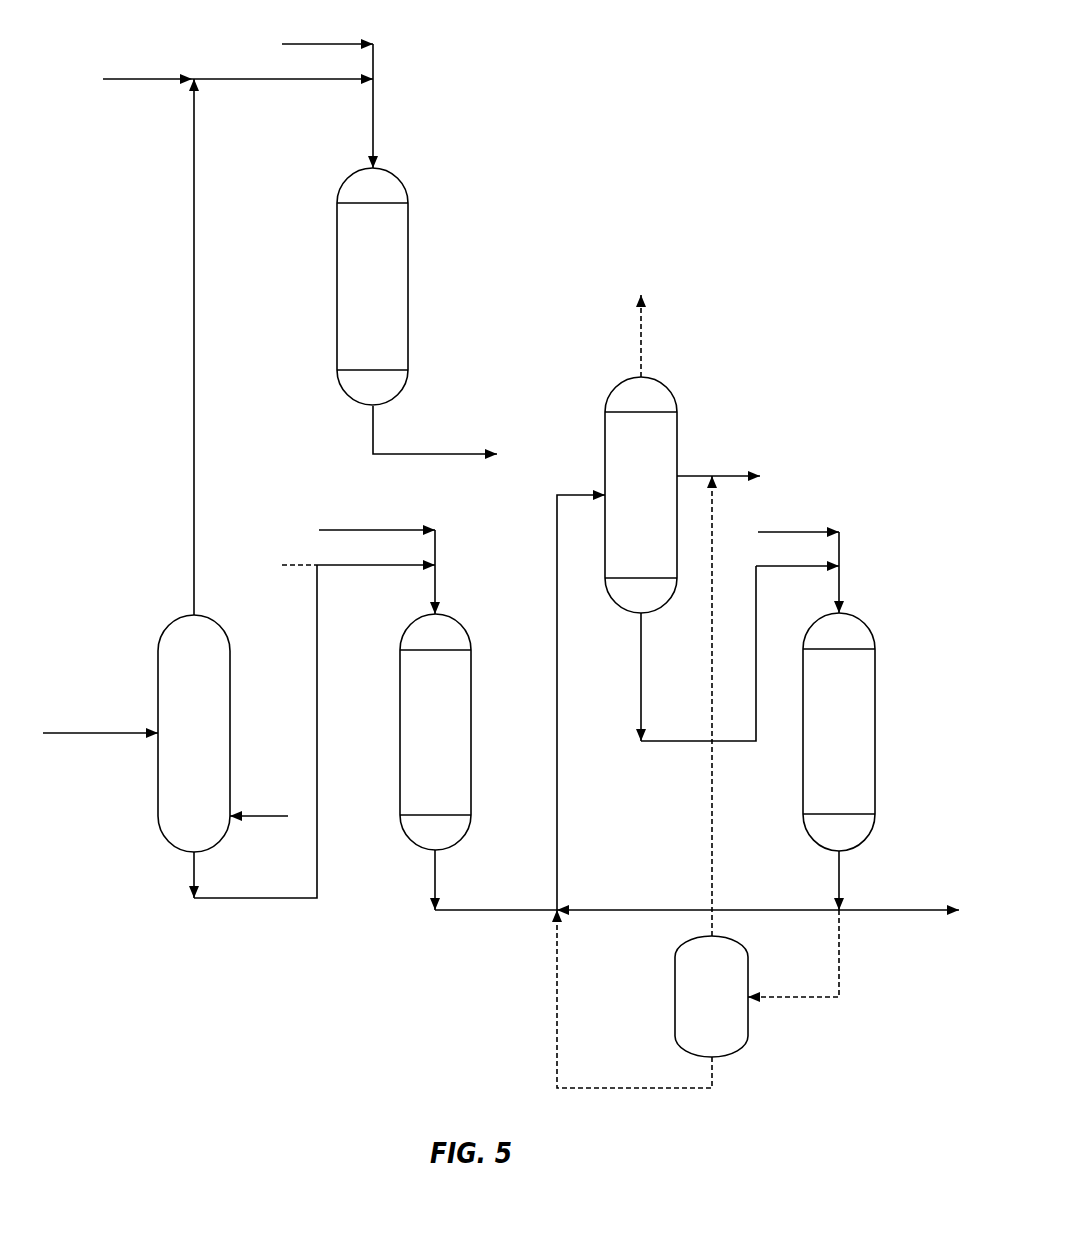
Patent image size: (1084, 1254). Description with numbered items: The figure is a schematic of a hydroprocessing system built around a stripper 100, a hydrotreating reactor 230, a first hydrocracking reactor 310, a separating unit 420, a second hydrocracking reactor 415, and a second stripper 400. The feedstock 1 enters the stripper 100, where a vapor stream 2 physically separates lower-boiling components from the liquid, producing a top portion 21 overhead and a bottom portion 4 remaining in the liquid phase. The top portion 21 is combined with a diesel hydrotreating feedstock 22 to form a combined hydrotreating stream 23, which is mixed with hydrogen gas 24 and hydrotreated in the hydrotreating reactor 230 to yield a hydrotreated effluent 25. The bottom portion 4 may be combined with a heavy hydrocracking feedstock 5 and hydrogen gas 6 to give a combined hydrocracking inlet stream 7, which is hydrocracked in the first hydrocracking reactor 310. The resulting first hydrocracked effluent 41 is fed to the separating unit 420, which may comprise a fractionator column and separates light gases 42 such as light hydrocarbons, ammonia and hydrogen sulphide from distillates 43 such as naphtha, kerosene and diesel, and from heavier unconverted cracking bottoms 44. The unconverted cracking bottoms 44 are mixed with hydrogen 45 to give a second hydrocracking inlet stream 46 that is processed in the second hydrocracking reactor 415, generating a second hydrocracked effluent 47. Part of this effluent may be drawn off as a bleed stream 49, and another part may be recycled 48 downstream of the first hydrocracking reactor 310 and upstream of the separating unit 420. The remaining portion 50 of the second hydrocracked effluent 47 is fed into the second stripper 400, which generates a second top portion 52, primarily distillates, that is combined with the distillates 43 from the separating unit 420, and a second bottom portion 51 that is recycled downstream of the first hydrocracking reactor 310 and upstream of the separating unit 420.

The feedstock 1 is at (54, 732).
The vapor stream 2 is at (271, 812).
The bottom portion 4 is at (194, 874).
The heavy hydrocracking feedstock 5 is at (293, 567).
The hydrogen gas 6 is at (370, 530).
The combined hydrocracking inlet stream 7 is at (436, 580).
The top portion 21 is at (193, 580).
The diesel hydrotreating feedstock 22 is at (150, 79).
The combined hydrotreating stream 23 is at (278, 80).
The hydrogen gas 24 is at (320, 44).
The hydrotreated effluent 25 is at (465, 454).
The first hydrocracked effluent 41 is at (495, 909).
The light gases 42 is at (642, 343).
The distillates 43 is at (720, 473).
The unconverted cracking bottoms 44 is at (642, 668).
The hydrogen 45 is at (792, 526).
The second hydrocracking inlet stream 46 is at (840, 582).
The second hydrocracked effluent 47 is at (838, 877).
The recycled portion 48 is at (735, 910).
The bleed stream 49 is at (902, 909).
The remaining portion 50 is at (787, 995).
The second bottom portion 51 is at (620, 1088).
The second top portion 52 is at (712, 833).
The stripper 100 is at (173, 746).
The hydrotreating reactor 230 is at (352, 301).
The first hydrocracking reactor 310 is at (414, 746).
The second stripper 400 is at (691, 1008).
The second hydrocracking reactor 415 is at (818, 746).
The separating unit 420 is at (620, 507).